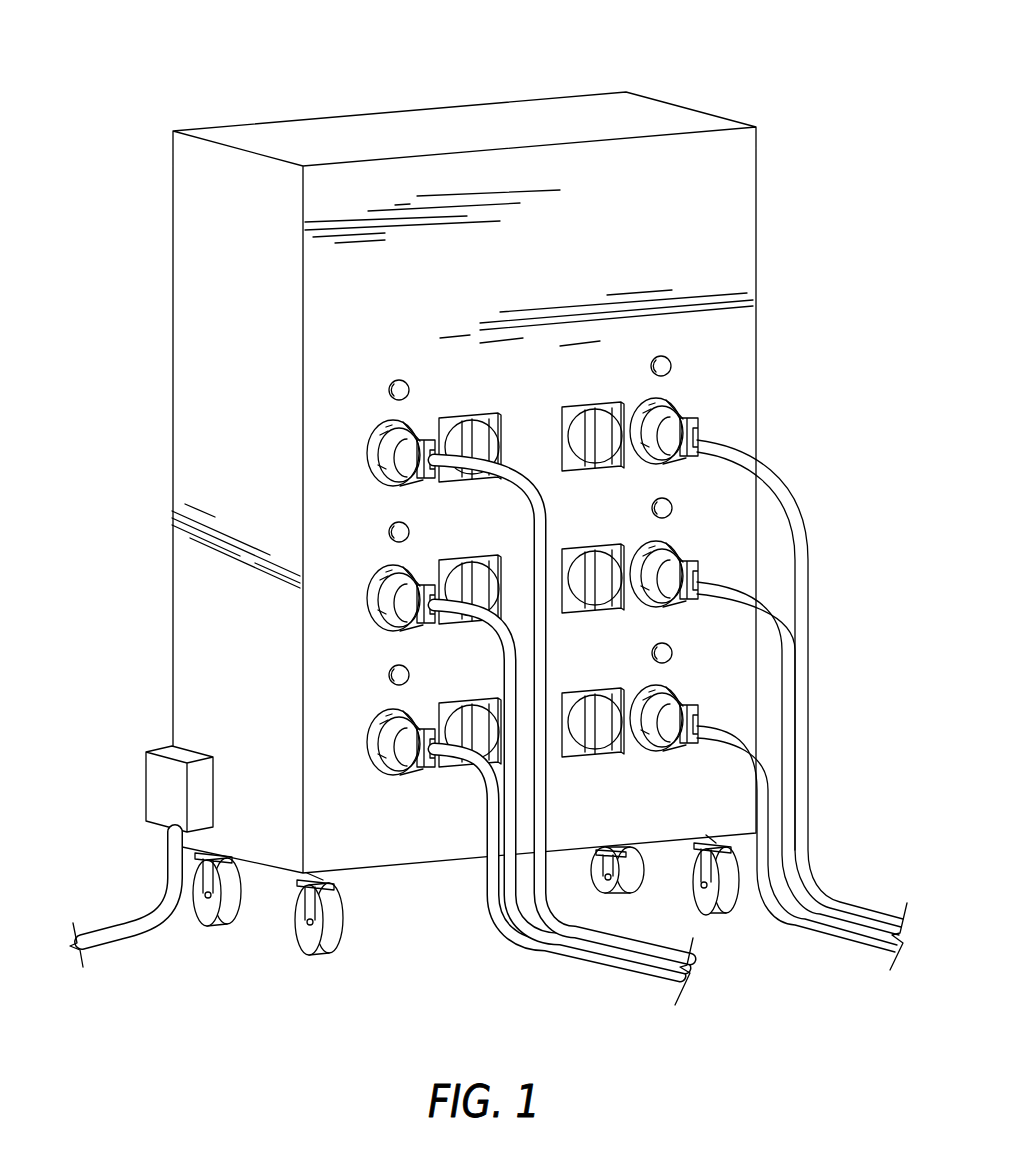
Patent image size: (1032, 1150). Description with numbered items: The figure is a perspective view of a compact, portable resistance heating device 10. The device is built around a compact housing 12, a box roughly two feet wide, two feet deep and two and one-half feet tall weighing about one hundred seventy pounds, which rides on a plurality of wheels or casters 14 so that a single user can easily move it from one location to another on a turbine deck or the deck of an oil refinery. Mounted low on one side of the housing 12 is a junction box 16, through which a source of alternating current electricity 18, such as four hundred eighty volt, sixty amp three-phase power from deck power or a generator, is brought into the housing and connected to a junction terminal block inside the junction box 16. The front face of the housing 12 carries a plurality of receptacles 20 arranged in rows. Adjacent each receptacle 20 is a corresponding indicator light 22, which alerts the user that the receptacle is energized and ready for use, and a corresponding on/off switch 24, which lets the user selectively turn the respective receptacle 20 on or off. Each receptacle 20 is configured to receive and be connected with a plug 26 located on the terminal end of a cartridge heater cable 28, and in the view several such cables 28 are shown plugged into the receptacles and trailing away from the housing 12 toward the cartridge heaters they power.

The compact, portable resistance heating device 10 is at (722, 66).
The compact housing 12 is at (193, 176).
The wheels or casters 14 is at (342, 925).
The junction box 16 is at (160, 790).
The source of alternating current electricity 18 is at (126, 933).
The receptacles 20 is at (370, 607).
The indicator light 22 is at (388, 530).
The on/off switch 24 is at (462, 433).
The plug 26 is at (697, 560).
The cartridge heater cable 28 is at (540, 950).